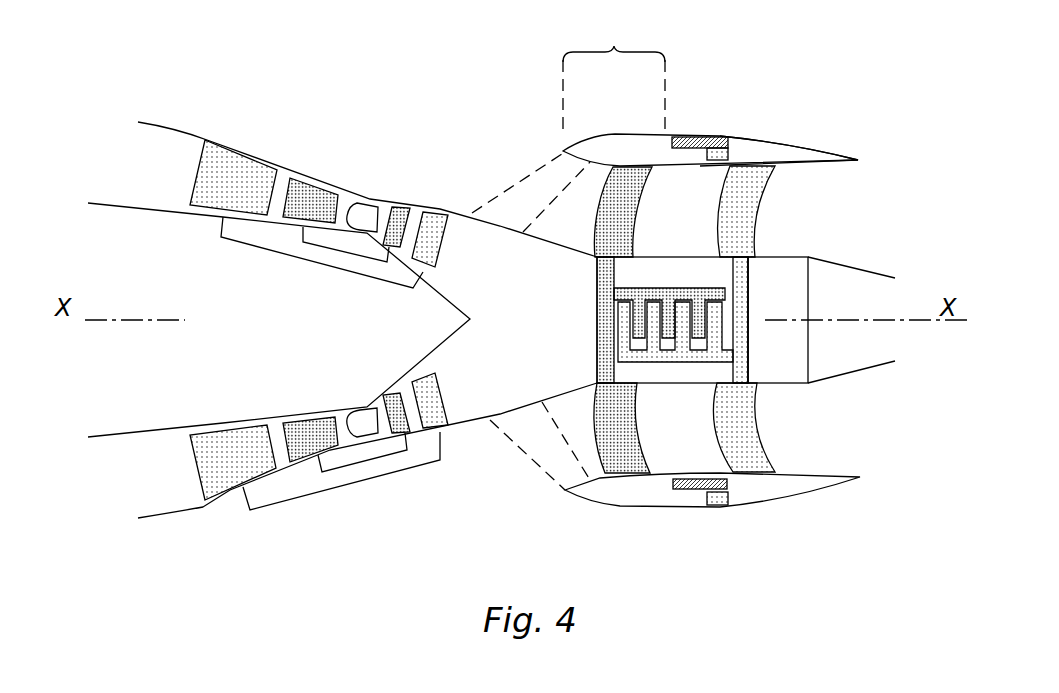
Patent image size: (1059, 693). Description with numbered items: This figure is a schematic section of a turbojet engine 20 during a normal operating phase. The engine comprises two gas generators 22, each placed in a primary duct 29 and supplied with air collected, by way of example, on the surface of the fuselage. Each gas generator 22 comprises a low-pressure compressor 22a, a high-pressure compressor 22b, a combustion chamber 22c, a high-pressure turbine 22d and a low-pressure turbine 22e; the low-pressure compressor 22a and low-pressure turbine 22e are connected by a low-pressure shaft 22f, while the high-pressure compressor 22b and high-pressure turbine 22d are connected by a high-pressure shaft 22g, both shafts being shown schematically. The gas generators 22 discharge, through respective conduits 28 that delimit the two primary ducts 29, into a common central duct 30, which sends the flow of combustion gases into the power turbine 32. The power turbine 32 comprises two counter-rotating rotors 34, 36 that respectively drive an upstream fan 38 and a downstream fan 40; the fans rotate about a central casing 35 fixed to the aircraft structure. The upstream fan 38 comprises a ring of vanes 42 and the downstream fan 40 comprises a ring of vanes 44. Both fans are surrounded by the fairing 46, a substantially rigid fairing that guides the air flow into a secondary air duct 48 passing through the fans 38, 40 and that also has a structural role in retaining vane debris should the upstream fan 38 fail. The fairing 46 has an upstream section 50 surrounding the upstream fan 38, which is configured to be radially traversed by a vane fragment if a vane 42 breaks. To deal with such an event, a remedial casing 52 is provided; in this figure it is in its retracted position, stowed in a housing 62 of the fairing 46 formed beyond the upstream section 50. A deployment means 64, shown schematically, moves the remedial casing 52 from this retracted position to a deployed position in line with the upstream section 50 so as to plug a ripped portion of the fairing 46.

The turbojet engine 20 is at (497, 527).
The gas generator 22 is at (325, 304).
The low-pressure compressor 22a is at (222, 155).
The high-pressure compressor 22b is at (305, 192).
The combustion chamber 22c is at (367, 212).
The high-pressure turbine 22d is at (398, 210).
The low-pressure turbine 22e is at (437, 222).
The low-pressure shaft 22f is at (320, 247).
The high-pressure shaft 22g is at (230, 242).
The conduit 28 is at (452, 332).
The primary duct 29 is at (465, 247).
The common central duct 30 is at (517, 322).
The power turbine 32 is at (679, 405).
The counter-rotating rotor 34 is at (668, 293).
The central casing 35 is at (793, 257).
The counter-rotating rotor 36 is at (690, 357).
The upstream fan 38 is at (608, 186).
The downstream fan 40 is at (745, 193).
The vane 42 is at (600, 442).
The vane 44 is at (752, 440).
The fairing 46 is at (842, 155).
The secondary air duct 48 is at (695, 200).
The upstream section 50 is at (614, 79).
The remedial casing 52 is at (690, 138).
The housing 62 is at (683, 495).
The deployment means 64 is at (725, 156).